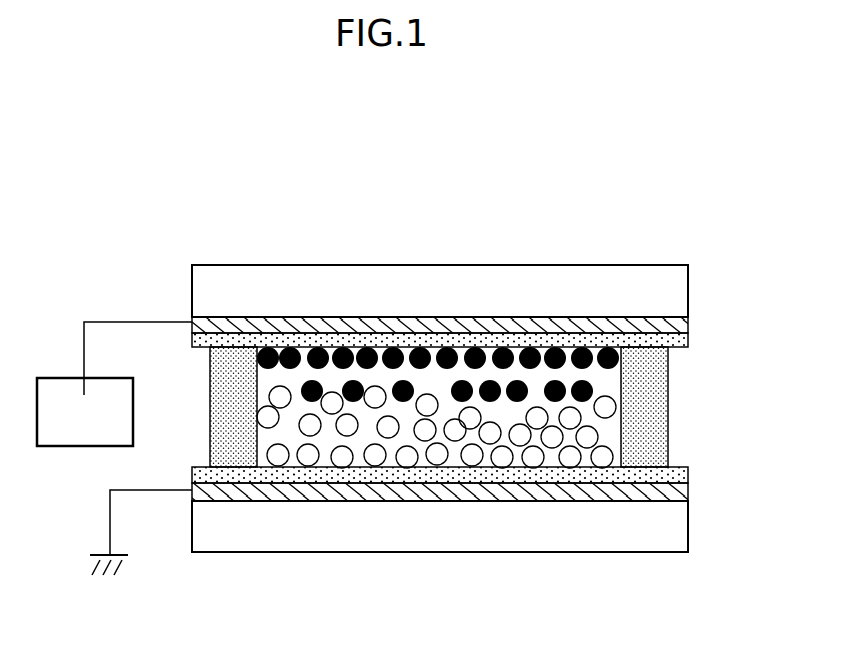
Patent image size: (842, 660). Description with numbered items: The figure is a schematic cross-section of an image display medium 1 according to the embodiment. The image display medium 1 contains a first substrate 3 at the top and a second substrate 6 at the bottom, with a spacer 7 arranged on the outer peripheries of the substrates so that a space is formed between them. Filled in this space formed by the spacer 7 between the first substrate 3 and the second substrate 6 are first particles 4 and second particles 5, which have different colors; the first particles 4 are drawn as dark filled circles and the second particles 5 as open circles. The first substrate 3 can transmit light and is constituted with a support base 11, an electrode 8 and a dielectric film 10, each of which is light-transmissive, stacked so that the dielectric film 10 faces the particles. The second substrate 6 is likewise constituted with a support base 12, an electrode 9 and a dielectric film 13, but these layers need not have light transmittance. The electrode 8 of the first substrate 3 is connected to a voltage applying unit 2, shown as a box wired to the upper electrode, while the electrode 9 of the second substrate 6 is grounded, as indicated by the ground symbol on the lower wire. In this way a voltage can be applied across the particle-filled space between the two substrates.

The image display medium 1 is at (396, 200).
The voltage applying unit 2 is at (50, 447).
The first substrate 3 is at (563, 265).
The first particles 4 is at (593, 388).
The second particles 5 is at (590, 437).
The second substrate 6 is at (473, 528).
The spacer 7 is at (628, 418).
The electrode 8 is at (685, 327).
The electrode 9 is at (684, 495).
The dielectric film 10 is at (687, 347).
The support base 11 is at (642, 283).
The support base 12 is at (650, 556).
The dielectric film 13 is at (687, 478).